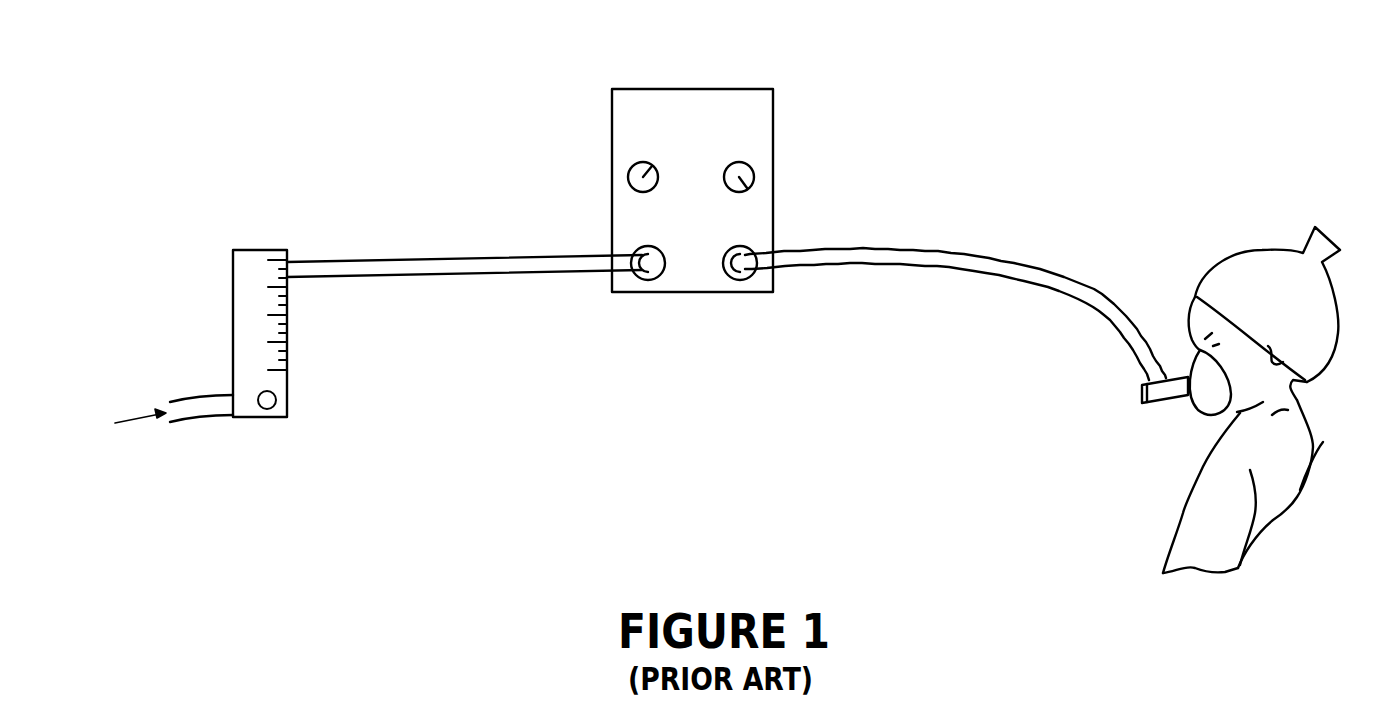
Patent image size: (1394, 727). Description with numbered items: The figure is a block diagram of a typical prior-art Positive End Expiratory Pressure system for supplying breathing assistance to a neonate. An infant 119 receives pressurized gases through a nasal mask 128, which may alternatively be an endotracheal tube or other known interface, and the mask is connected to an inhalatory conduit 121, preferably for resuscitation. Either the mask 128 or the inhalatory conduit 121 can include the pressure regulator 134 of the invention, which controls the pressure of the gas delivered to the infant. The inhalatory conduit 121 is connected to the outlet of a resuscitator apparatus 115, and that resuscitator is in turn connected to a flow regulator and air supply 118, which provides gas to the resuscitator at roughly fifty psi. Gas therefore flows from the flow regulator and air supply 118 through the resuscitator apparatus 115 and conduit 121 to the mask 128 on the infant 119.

The resuscitator apparatus 115 is at (777, 143).
The flow regulator and air supply 118 is at (255, 250).
The infant 119 is at (1265, 278).
The inhalatory conduit 121 is at (1080, 297).
The nasal mask 128 is at (1197, 353).
The pressure regulator 134 is at (1140, 403).